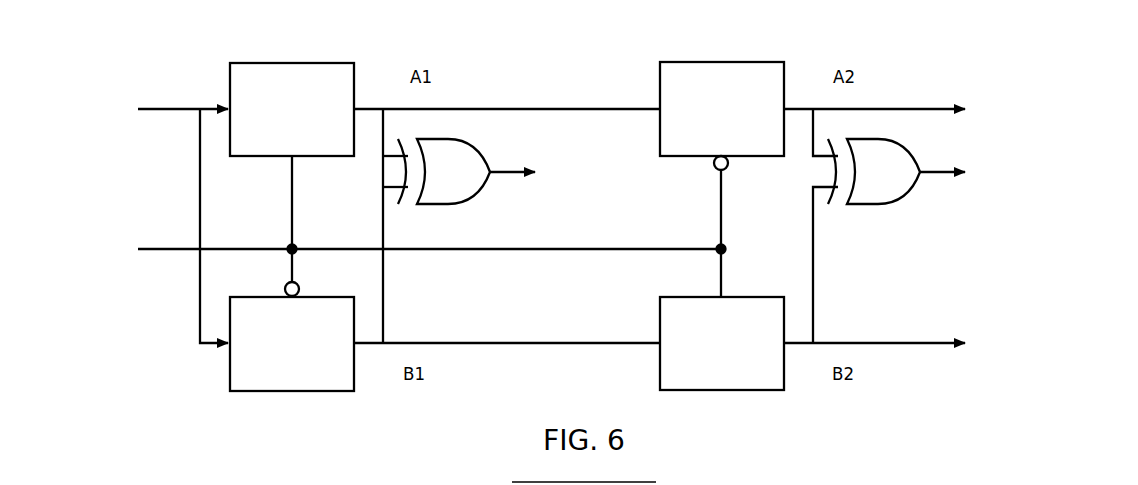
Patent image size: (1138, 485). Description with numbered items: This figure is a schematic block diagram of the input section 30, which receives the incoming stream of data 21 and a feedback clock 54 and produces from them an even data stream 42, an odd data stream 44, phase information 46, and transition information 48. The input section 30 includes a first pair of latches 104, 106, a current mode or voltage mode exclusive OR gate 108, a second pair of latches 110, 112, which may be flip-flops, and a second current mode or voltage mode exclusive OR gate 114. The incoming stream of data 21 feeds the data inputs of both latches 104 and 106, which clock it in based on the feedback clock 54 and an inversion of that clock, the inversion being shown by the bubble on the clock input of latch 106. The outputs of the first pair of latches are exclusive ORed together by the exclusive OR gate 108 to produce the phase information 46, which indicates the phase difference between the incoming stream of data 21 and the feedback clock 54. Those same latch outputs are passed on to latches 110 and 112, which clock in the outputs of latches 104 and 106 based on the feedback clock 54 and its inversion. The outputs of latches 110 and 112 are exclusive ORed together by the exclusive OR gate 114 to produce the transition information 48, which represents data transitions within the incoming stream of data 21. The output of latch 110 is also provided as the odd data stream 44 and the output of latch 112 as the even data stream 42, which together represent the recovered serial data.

The input section 30 is at (584, 472).
The incoming stream of data 21 is at (157, 186).
The feedback clock 54 is at (406, 226).
The latch 104 is at (292, 109).
The latch 106 is at (292, 336).
The exclusive OR gate 108 is at (436, 171).
The phase information 46 is at (584, 170).
The latch 110 is at (722, 116).
The latch 112 is at (722, 343).
The exclusive OR gate 114 is at (874, 171).
The odd data stream 44 is at (929, 108).
The even data stream 42 is at (933, 343).
The transition information 48 is at (1022, 169).